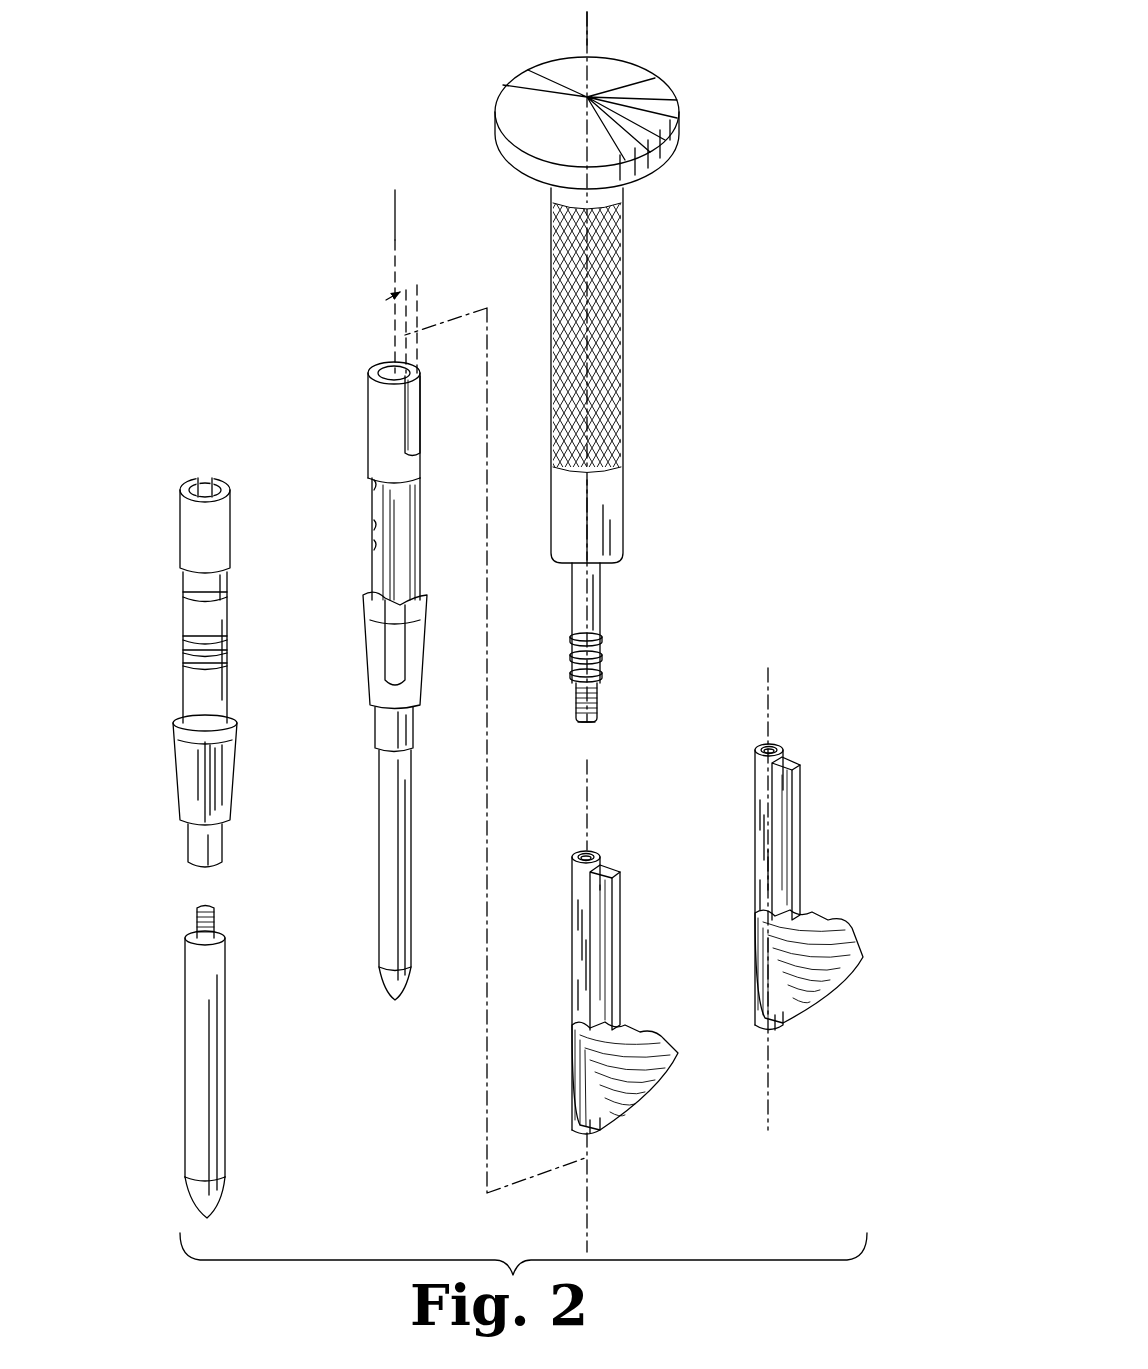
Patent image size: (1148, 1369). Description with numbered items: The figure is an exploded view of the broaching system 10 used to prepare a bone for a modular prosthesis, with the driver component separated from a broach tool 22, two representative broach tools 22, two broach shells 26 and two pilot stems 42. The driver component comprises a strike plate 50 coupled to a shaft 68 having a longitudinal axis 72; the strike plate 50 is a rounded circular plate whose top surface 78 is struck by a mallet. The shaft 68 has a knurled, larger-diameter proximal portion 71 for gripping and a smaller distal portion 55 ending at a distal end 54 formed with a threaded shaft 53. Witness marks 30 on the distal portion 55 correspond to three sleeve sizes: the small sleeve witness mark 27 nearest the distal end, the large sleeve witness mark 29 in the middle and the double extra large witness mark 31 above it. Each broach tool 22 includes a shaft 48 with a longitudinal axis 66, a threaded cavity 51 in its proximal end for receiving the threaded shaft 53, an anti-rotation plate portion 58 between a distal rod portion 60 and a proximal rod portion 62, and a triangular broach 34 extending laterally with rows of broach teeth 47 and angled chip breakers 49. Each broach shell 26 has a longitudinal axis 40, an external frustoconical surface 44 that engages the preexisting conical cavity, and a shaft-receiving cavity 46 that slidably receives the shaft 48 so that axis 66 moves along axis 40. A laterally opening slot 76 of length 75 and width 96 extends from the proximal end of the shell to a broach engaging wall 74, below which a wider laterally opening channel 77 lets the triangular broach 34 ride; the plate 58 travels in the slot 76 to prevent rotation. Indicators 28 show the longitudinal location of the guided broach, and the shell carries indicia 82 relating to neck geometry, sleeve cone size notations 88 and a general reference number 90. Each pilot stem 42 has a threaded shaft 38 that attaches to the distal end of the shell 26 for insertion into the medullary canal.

The broaching system 10 is at (752, 186).
The broach tool 22 is at (616, 960).
The broach shell 26 is at (172, 700).
The small sleeve witness mark 27 is at (592, 674).
The indicator 28 is at (190, 488).
The large sleeve witness mark 29 is at (592, 656).
The witness marks 30 is at (583, 644).
The double extra large witness mark 31 is at (592, 637).
The triangular broach 34 is at (632, 1100).
The threaded shaft 38 is at (196, 912).
The longitudinal axis 40 is at (393, 215).
The pilot stem 42 is at (265, 984).
The external frustoconical surface 44 is at (185, 772).
The shaft-receiving cavity 46 is at (406, 486).
The broach teeth 47 is at (840, 955).
The shaft 48 is at (572, 975).
The chip breakers 49 is at (805, 978).
The strike plate 50 is at (557, 114).
The threaded cavity 51 is at (583, 850).
The threaded shaft 53 is at (596, 720).
The distal end 54 is at (598, 686).
The distal portion 55 is at (592, 586).
The anti-rotation plate portion 58 is at (606, 905).
The distal rod portion 60 is at (594, 1136).
The proximal rod portion 62 is at (592, 852).
The longitudinal axis 66 is at (595, 1232).
The shaft 68 is at (612, 375).
The proximal portion 71 is at (618, 236).
The longitudinal axis 72 is at (594, 42).
The broach engaging wall 74 is at (380, 478).
The length 75 is at (383, 405).
The laterally opening slot 76 is at (410, 438).
The laterally opening channel 77 is at (398, 508).
The top surface 78 is at (635, 84).
The indicia 82 is at (185, 666).
The sleeve cone size notations 88 is at (188, 586).
The general reference number 90 is at (232, 702).
The width 96 is at (425, 282).